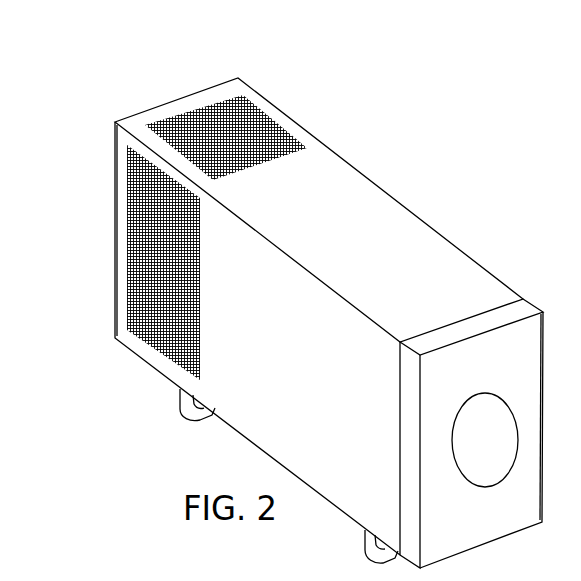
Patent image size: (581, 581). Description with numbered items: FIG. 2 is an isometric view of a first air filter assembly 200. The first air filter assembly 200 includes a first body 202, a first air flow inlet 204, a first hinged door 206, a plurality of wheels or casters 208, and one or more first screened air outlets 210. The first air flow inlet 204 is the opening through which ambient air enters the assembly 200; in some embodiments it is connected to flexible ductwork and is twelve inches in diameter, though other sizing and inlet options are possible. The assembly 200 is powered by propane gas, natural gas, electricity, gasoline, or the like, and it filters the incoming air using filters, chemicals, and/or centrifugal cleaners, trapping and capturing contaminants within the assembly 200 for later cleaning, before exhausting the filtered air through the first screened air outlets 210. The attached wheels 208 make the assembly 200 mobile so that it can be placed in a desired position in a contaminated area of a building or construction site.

The first air filter assembly 200 is at (102, 68).
The first body 202 is at (361, 241).
The first air flow inlet 204 is at (498, 459).
The first hinged door 206 is at (488, 374).
The wheels (casters) 208 is at (184, 405).
The first screened air outlets 210 is at (158, 246).